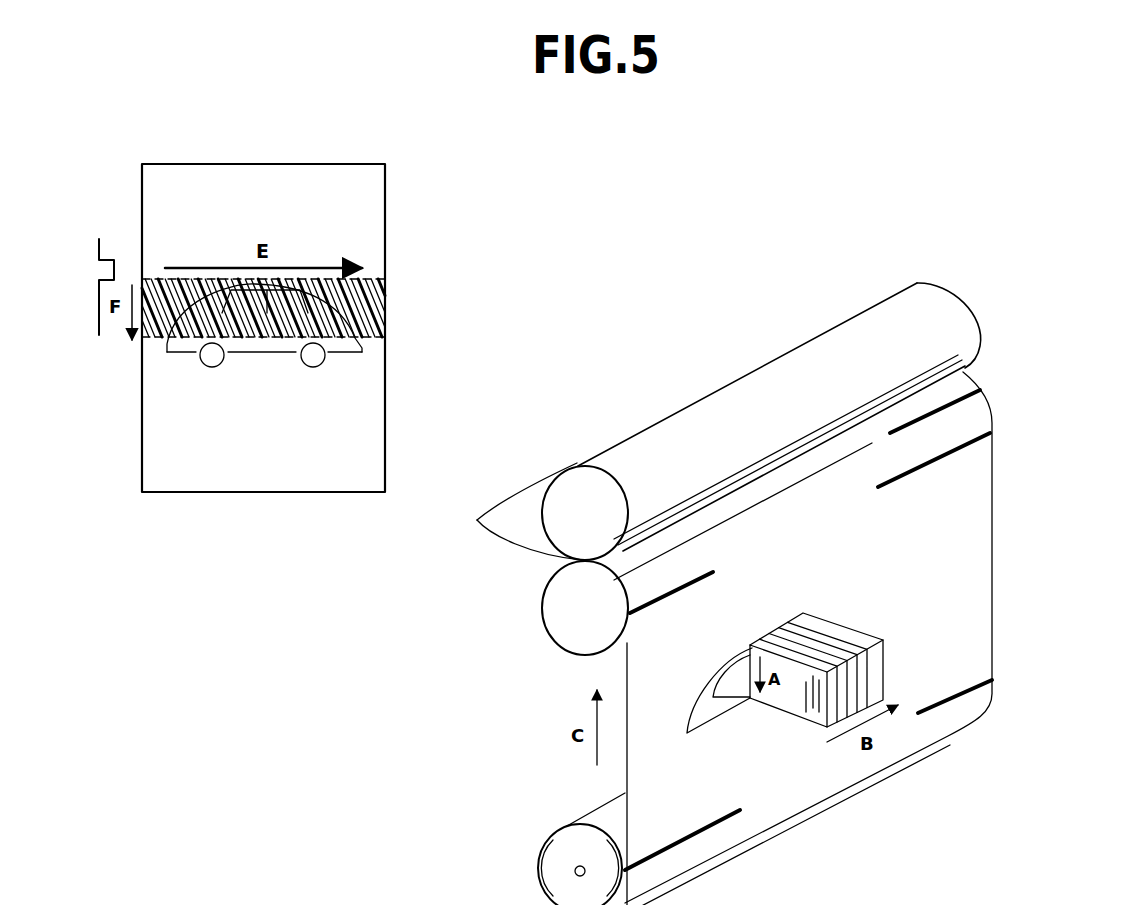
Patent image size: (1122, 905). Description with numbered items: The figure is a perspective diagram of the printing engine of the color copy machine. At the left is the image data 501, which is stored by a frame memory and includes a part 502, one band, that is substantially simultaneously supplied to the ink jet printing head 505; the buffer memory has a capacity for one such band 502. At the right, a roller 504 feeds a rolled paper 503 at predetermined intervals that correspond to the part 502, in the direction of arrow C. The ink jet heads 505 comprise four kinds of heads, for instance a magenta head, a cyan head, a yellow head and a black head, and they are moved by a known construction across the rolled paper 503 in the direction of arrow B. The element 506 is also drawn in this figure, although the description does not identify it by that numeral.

The image data 501 is at (312, 163).
The band 502 is at (385, 297).
The rolled paper 503 is at (538, 845).
The roller 504 is at (963, 313).
The ink jet printing head 505 is at (887, 667).
The recording head 506 is at (98, 248).